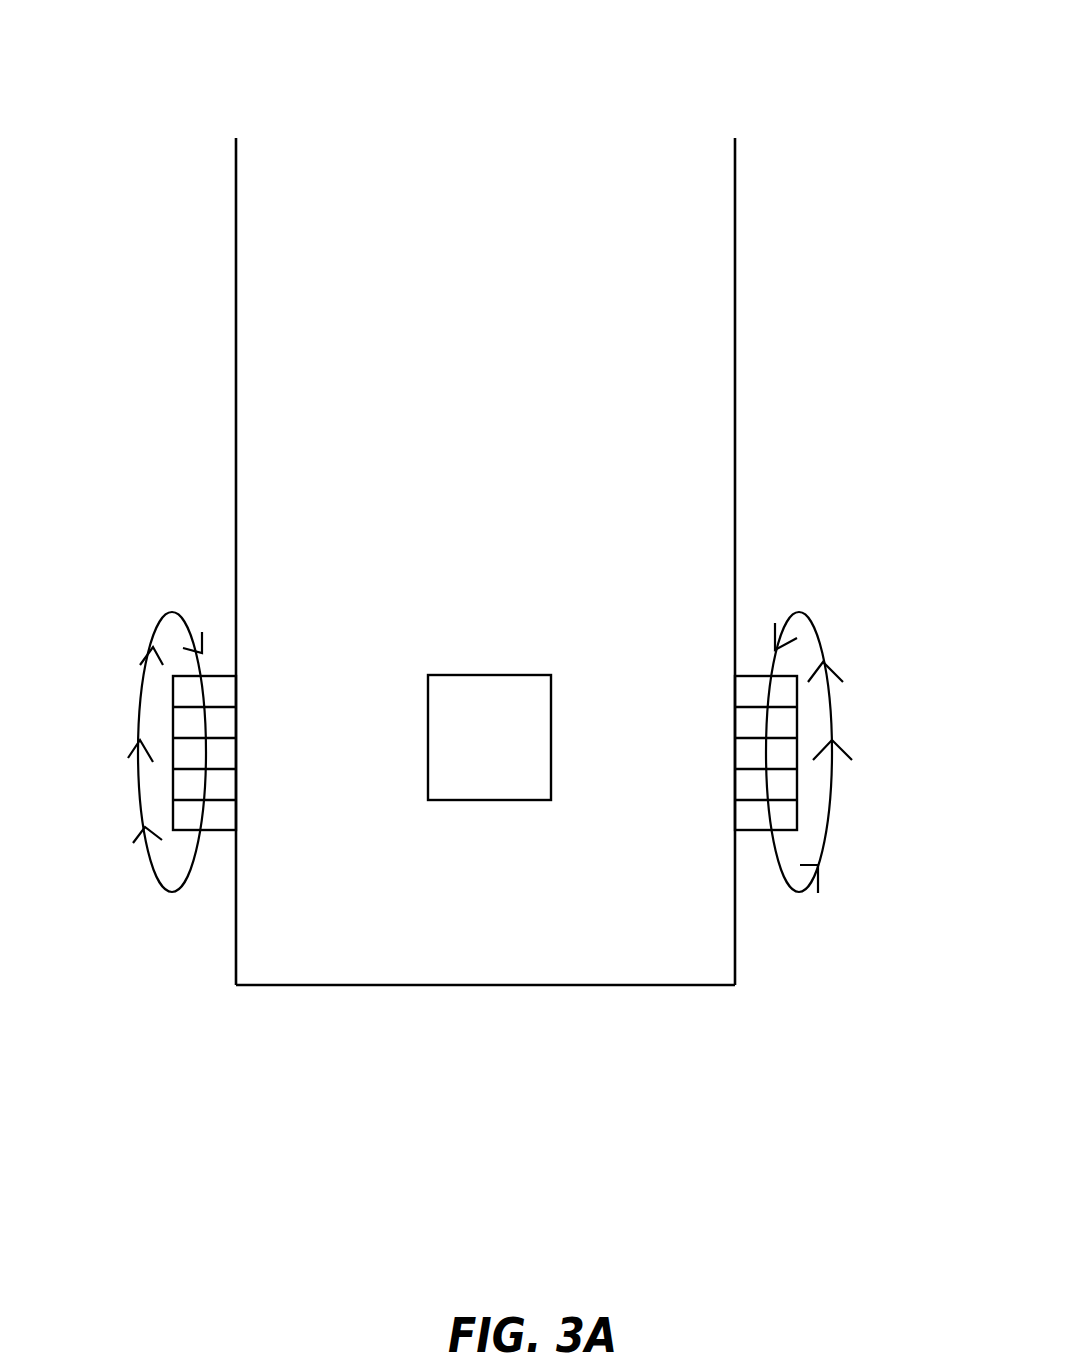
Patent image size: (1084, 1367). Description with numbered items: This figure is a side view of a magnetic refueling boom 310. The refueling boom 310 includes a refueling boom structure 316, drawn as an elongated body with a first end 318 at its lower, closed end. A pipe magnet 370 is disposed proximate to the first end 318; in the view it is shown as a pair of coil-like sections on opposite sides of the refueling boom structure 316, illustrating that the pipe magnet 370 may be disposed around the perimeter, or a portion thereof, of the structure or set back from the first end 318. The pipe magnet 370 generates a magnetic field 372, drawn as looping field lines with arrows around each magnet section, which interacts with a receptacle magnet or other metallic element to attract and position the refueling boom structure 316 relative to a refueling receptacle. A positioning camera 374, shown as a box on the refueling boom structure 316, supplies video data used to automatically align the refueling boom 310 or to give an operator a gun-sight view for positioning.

The refueling boom 310 is at (231, 97).
The refueling boom structure 316 is at (635, 507).
The first end 318 is at (460, 987).
The pipe magnet 370 is at (219, 832).
The magnetic field 372 is at (150, 857).
The positioning camera 374 is at (551, 748).